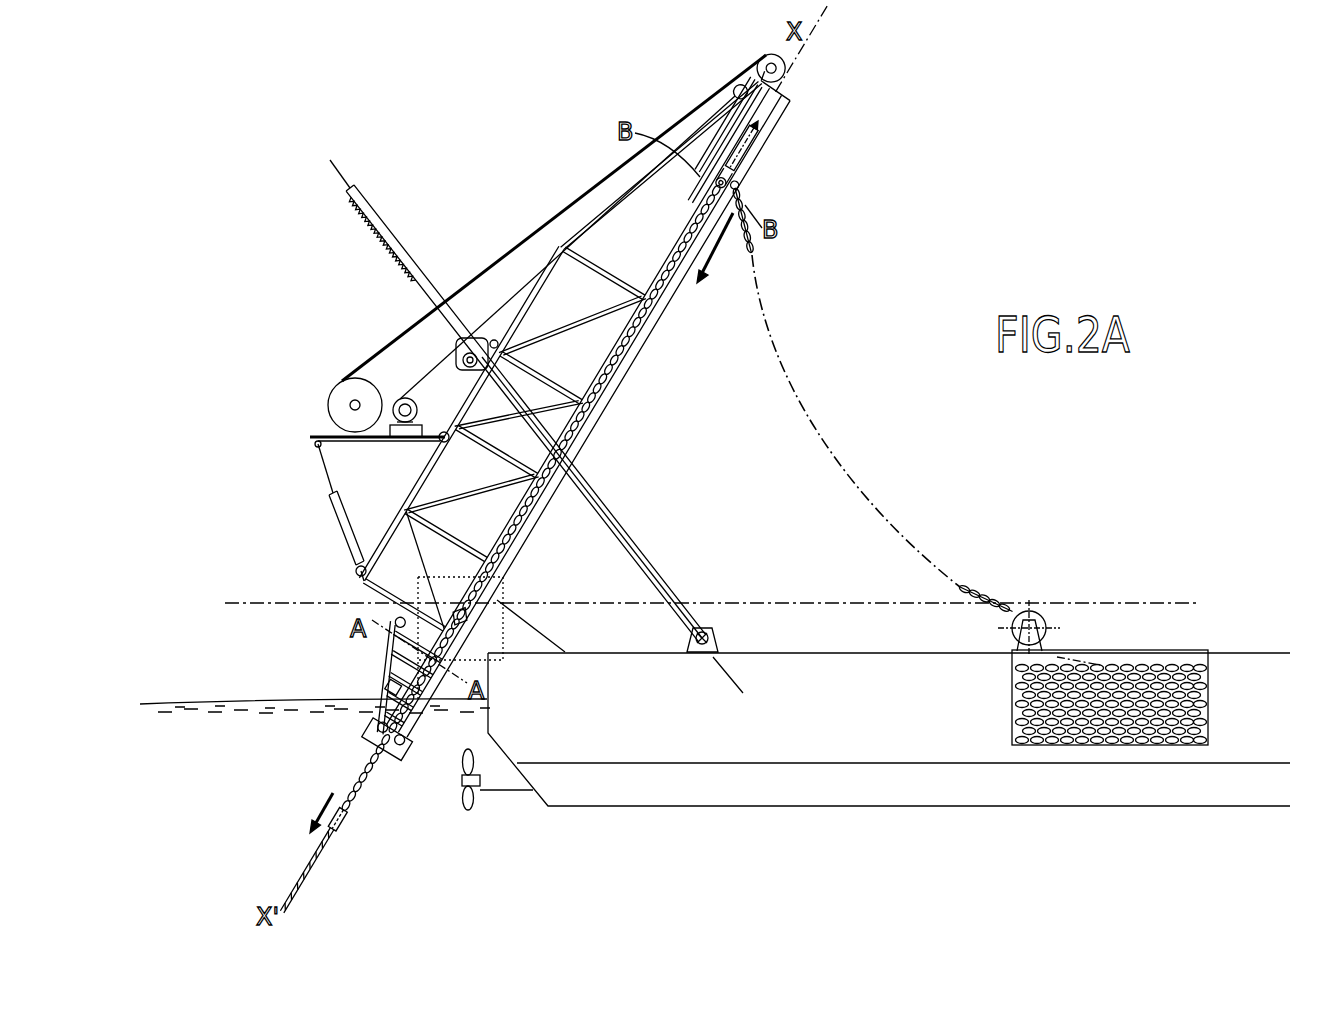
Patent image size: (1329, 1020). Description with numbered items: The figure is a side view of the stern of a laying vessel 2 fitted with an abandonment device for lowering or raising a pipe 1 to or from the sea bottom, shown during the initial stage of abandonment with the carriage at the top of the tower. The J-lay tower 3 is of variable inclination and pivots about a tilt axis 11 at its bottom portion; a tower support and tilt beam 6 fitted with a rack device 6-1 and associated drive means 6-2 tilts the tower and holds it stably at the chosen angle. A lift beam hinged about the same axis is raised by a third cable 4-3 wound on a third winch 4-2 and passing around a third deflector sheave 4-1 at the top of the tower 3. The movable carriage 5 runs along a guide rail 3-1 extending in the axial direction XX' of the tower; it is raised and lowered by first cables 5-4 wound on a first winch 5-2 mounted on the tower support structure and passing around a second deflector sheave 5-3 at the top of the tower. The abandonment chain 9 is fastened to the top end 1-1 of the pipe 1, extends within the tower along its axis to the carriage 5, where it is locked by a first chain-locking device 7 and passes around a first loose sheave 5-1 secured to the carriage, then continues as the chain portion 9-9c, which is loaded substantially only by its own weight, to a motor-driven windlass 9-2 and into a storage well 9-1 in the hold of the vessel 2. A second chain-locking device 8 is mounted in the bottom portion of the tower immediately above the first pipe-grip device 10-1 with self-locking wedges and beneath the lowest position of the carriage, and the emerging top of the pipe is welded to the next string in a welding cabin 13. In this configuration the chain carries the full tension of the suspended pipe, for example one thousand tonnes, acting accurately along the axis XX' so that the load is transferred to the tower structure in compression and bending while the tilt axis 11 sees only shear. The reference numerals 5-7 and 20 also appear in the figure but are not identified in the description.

The pipe 1 is at (323, 860).
The top end of the pipe 1-1 is at (347, 830).
The vessel 2 is at (803, 652).
The tower 3 is at (663, 323).
The guide rail 3-1 is at (667, 257).
The third deflector sheave 4-1 is at (733, 88).
The third winch 4-2 is at (395, 402).
The third cable 4-3 is at (640, 175).
The moving carriage 5 is at (747, 160).
The first loose sheave 5-1 is at (745, 188).
The first winch 5-2 is at (333, 405).
The second deflector sheave 5-3 is at (787, 63).
The first cable 5-4 is at (580, 202).
The cable run 5-7 is at (707, 168).
The tower support and tilt beam 6 is at (447, 283).
The rack device 6-1 is at (368, 232).
The drive means 6-2 is at (460, 370).
The first chain-locking device 7 is at (713, 183).
The second chain-locking device 8 is at (397, 647).
The abandonment chain 9 is at (367, 777).
The storage well 9-1 is at (1117, 663).
The motor-driven windlass 9-2 is at (1050, 620).
The portion of the abandonment chain 9-9c is at (793, 390).
The first grip device with self-locking wedges 10-1 is at (393, 683).
The tilt axis 11 is at (463, 593).
The welding cabin 13 is at (383, 593).
The water surface 20 is at (213, 697).